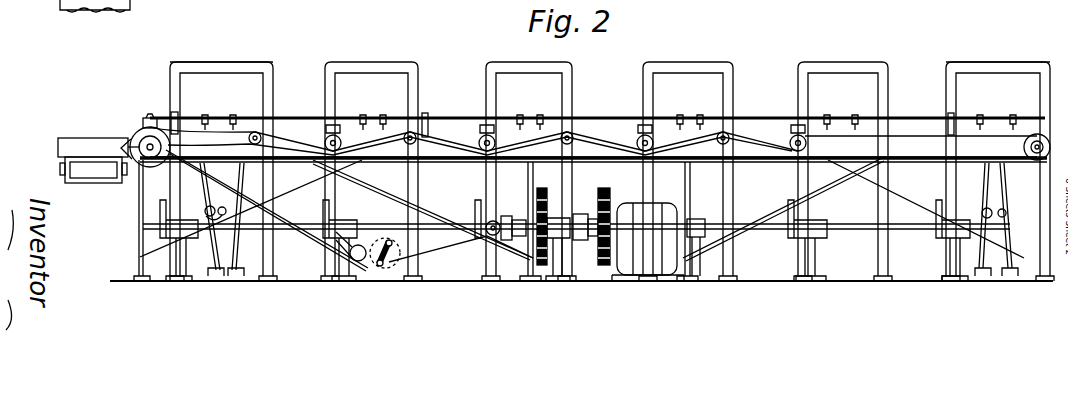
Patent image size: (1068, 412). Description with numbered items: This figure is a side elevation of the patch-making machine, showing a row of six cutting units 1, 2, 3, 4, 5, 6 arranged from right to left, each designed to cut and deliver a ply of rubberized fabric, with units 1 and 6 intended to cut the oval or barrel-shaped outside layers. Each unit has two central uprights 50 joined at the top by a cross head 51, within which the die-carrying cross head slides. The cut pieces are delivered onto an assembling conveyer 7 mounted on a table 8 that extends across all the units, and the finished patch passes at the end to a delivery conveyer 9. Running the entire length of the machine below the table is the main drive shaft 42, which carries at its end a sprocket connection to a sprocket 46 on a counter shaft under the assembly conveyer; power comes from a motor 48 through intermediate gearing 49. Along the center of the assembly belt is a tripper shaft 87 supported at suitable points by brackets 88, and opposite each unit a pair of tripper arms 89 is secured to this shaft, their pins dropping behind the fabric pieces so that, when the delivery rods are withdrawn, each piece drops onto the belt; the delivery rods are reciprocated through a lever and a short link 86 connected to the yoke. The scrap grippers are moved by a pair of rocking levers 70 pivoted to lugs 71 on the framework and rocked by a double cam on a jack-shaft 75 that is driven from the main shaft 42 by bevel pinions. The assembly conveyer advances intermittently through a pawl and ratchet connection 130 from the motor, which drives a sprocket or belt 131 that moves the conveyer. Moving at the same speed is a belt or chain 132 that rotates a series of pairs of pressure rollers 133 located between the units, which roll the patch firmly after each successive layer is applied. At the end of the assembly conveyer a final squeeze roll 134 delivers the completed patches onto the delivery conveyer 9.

The unit 1 is at (1020, 62).
The unit 2 is at (858, 62).
The unit 3 is at (705, 62).
The unit 4 is at (535, 62).
The unit 5 is at (398, 62).
The unit 6 is at (263, 62).
The assembling conveyer 7 is at (1030, 134).
The table 8 is at (593, 142).
The delivery conveyer 9 is at (97, 178).
The main drive shaft 42 is at (434, 224).
The sprocket 46 is at (937, 239).
The motor 48 is at (650, 268).
The intermediate gearing 49 is at (605, 192).
The central uprights 50 is at (170, 88).
The cross head 51 is at (171, 67).
The rocking levers 70 is at (210, 205).
The lugs 71 is at (217, 278).
The jack-shaft 75 is at (205, 214).
The short link 86 is at (947, 112).
The tripper shaft 87 is at (597, 116).
The brackets 88 is at (427, 113).
The tripper arms 89 is at (231, 115).
The pawl and ratchet connection 130 is at (381, 240).
The sprocket or belt 131 is at (258, 186).
The belt or chain 132 is at (1011, 115).
The pressure rollers 133 is at (330, 125).
The final squeeze roll 134 is at (144, 118).